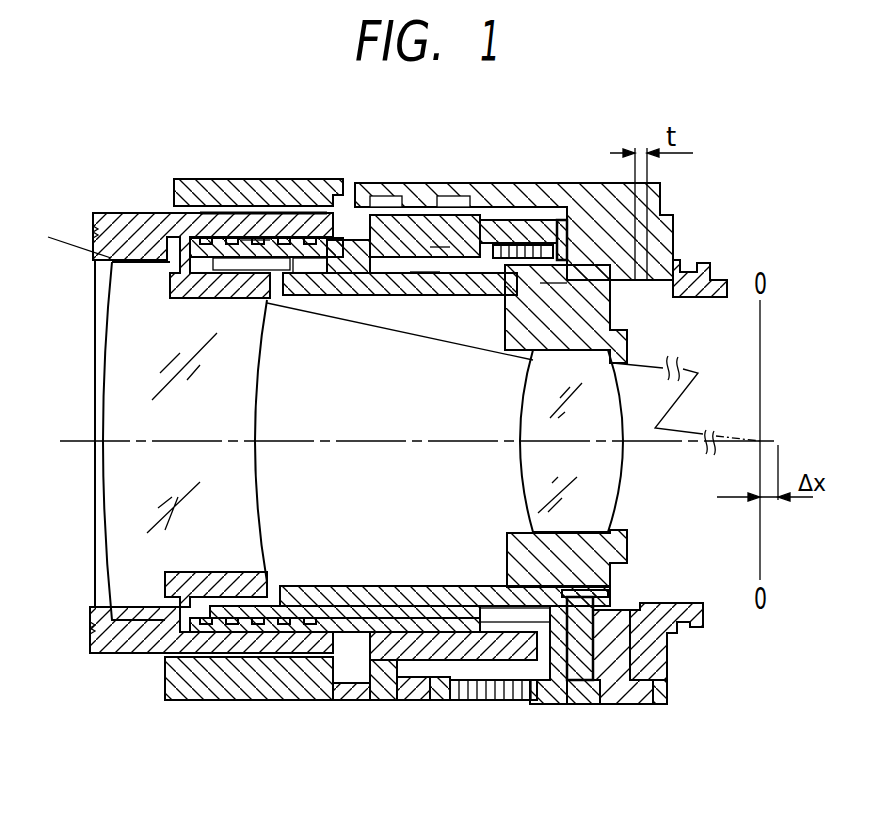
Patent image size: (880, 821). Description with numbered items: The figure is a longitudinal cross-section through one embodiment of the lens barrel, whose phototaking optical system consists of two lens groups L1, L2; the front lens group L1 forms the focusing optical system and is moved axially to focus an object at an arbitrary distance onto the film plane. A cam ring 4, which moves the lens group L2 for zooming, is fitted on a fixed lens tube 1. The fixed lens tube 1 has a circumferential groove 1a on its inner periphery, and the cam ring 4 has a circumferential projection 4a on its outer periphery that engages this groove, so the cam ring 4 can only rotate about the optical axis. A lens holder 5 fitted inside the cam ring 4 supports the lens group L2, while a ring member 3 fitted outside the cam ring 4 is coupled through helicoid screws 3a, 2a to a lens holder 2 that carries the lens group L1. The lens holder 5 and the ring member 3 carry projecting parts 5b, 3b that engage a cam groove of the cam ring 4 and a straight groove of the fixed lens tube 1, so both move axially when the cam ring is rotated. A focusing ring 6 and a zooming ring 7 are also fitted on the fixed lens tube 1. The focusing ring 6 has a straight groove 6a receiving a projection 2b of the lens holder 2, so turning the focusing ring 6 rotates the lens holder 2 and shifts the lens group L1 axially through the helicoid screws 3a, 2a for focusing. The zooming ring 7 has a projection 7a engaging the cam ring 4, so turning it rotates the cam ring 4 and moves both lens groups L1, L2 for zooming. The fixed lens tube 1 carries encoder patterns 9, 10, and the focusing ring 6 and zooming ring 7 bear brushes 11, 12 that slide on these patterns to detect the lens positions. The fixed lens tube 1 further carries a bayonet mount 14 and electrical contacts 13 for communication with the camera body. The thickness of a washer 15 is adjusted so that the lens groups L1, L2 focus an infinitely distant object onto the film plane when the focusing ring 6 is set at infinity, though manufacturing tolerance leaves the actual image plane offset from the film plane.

The fixed lens tube 1 is at (630, 683).
The circumferential groove 1a is at (437, 245).
The lens holder 2 is at (148, 640).
The helicoid screw 2a is at (200, 200).
The projection 2b is at (315, 213).
The ring member 3 is at (318, 632).
The helicoid screw 3a is at (248, 238).
The projecting part 3b is at (352, 240).
The cam ring 4 is at (355, 606).
The circumferential projection 4a is at (422, 270).
The lens holder 5 is at (552, 590).
The projecting part 5b is at (545, 280).
The focusing ring 6 is at (183, 697).
The straight groove 6a is at (223, 205).
The zooming ring 7 is at (578, 662).
The projection 7a is at (583, 660).
The encoder pattern 9 is at (513, 240).
The encoder pattern 10 is at (460, 690).
The brush 11 is at (480, 250).
The brush 12 is at (475, 690).
The electrical contacts 13 is at (720, 278).
The bayonet mount 14 is at (670, 657).
The washer 15 is at (640, 662).
The lens group L1 is at (124, 598).
The lens group L2 is at (592, 505).